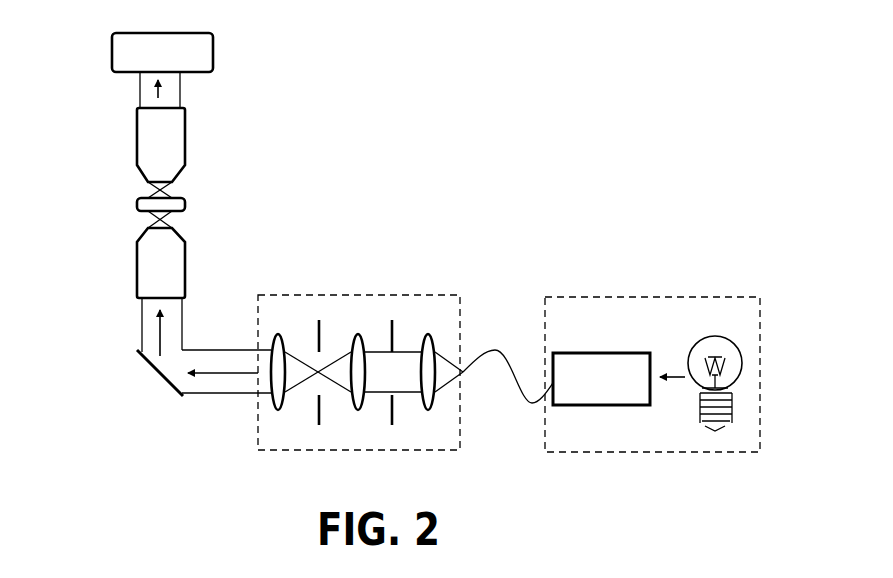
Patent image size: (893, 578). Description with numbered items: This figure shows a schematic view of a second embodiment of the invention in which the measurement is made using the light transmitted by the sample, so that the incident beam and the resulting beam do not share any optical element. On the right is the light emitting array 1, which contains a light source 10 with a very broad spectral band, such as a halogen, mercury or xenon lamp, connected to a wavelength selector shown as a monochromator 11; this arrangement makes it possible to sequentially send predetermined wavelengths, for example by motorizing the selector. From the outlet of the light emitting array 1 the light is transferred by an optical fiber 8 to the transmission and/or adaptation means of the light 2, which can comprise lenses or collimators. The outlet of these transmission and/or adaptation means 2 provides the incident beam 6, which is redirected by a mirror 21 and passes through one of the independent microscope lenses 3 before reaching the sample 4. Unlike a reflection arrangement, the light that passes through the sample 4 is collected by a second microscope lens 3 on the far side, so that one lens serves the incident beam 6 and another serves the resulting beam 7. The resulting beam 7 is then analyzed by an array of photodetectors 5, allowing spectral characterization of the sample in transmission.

The light emitting array 1 is at (700, 297).
The transmission and/or adaptation means of the light 2 is at (358, 294).
The microscope lenses 3 is at (147, 135).
The sample 4 is at (137, 203).
The array of photodetectors 5 is at (127, 49).
The incident beam 6 is at (165, 333).
The resulting beam 7 is at (162, 93).
The optical fiber 8 is at (500, 350).
The light source 10 is at (690, 370).
The monochromator 11 is at (592, 365).
The mirror 21 is at (150, 368).